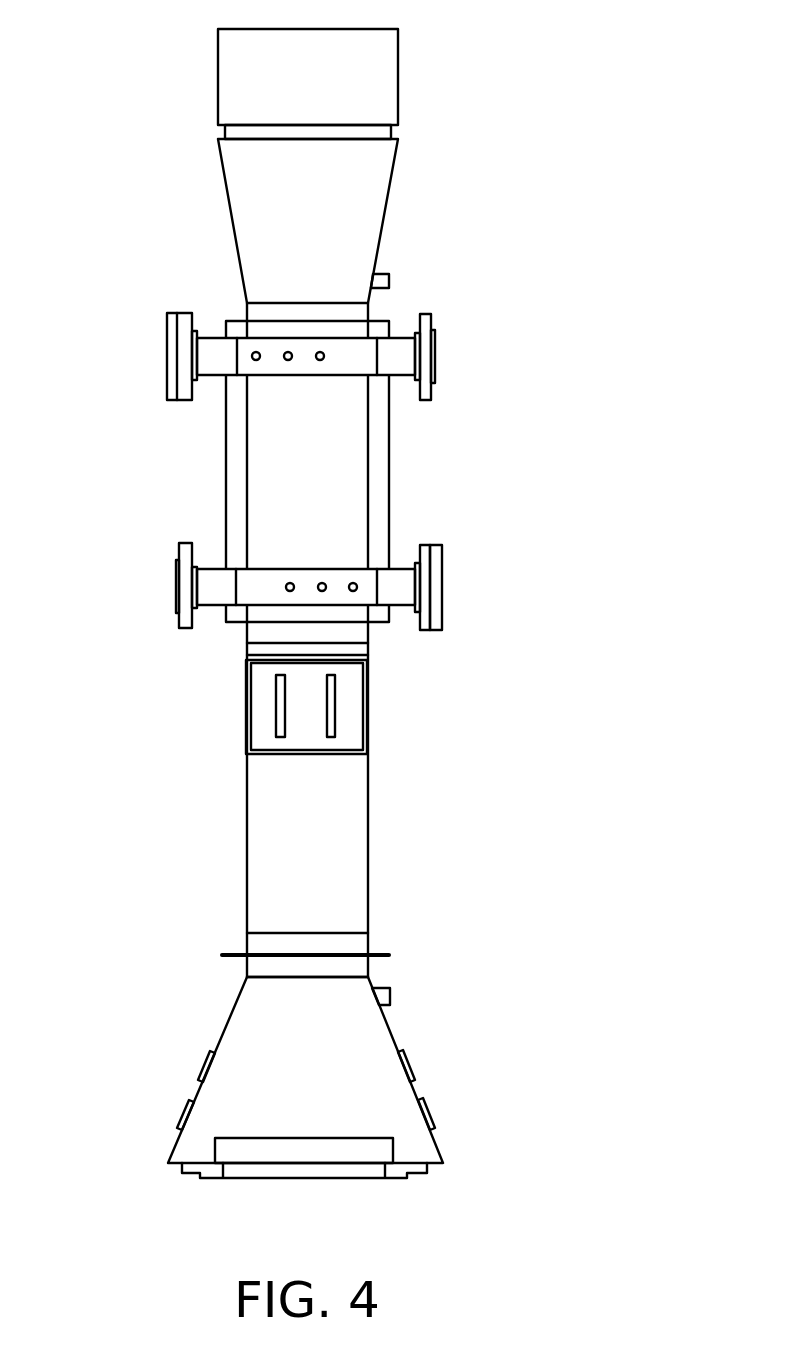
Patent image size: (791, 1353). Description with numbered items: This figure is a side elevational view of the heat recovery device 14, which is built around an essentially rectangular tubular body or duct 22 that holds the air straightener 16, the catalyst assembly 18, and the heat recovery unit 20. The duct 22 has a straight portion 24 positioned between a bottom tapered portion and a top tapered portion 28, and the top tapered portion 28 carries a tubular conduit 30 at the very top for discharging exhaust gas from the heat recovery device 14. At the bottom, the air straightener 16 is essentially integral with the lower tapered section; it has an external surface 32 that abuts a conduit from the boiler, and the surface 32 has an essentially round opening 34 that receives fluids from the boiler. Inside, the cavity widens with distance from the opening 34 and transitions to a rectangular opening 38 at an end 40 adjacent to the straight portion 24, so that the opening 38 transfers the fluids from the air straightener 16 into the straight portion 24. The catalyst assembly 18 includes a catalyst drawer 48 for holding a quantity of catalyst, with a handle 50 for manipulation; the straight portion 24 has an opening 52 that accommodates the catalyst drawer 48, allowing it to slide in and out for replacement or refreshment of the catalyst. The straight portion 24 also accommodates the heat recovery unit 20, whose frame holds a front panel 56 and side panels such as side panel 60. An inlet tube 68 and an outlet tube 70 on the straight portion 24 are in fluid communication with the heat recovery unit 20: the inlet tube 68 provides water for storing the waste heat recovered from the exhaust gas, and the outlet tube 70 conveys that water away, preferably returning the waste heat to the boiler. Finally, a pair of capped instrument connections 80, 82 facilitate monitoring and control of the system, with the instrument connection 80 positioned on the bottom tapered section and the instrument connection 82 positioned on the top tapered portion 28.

The heat recovery device 14 is at (126, 203).
The air straightener 16 is at (233, 1002).
The catalyst assembly 18 is at (368, 740).
The heat recovery unit 20 is at (227, 465).
The duct 22 is at (243, 880).
The straight portion 24 is at (281, 911).
The top tapered portion 28 is at (375, 175).
The tubular conduit 30 is at (385, 57).
The external surface 32 is at (167, 1168).
The round opening 34 is at (368, 1178).
The rectangular opening 38 is at (353, 967).
The end 40 is at (362, 957).
The catalyst drawer 48 is at (262, 717).
The handle 50 is at (337, 700).
The opening 52 is at (320, 755).
The front panel 56 is at (345, 473).
The side panel 60 is at (368, 622).
The inlet tube 68 is at (435, 352).
The outlet tube 70 is at (442, 583).
The instrument connection 80 is at (390, 993).
The instrument connection 82 is at (389, 281).